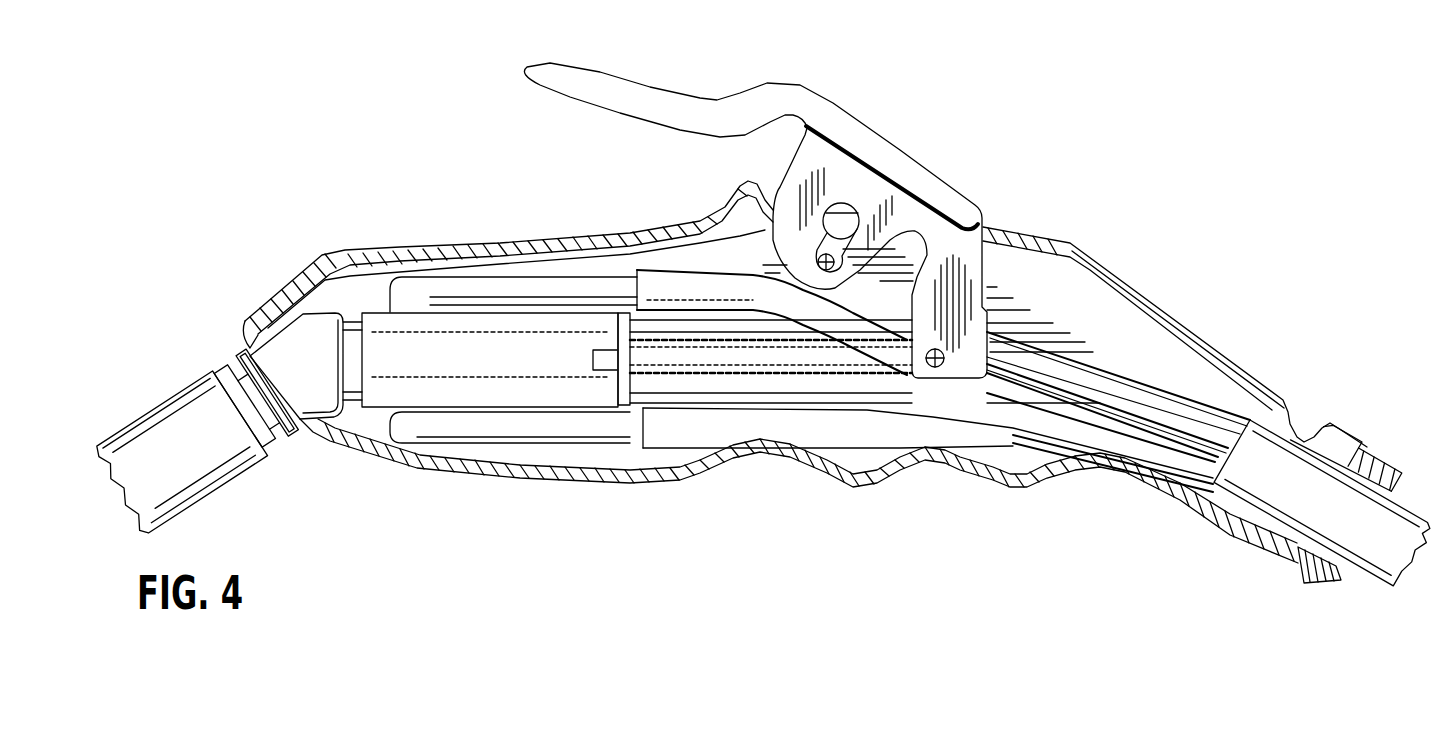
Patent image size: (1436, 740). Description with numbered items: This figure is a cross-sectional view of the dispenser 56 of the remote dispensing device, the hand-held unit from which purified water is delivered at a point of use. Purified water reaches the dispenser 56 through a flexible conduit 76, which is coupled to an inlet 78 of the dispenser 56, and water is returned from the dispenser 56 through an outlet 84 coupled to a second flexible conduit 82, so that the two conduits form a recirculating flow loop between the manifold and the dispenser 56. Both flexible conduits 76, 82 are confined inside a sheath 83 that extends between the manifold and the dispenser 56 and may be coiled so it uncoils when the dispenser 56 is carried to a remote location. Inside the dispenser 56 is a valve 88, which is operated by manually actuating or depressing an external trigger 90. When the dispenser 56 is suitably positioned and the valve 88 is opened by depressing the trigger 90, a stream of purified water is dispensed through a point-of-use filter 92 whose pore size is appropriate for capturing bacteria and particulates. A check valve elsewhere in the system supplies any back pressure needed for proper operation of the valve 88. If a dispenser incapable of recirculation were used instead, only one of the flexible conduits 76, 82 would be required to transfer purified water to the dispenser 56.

The dispenser 56 is at (1105, 262).
The flexible conduit 76 is at (1108, 377).
The inlet 78 is at (483, 290).
The flexible conduit 82 is at (1113, 430).
The sheath 83 is at (1337, 503).
The outlet 84 is at (500, 437).
The valve 88 is at (410, 357).
The trigger 90 is at (872, 126).
The point-of-use filter 92 is at (187, 386).